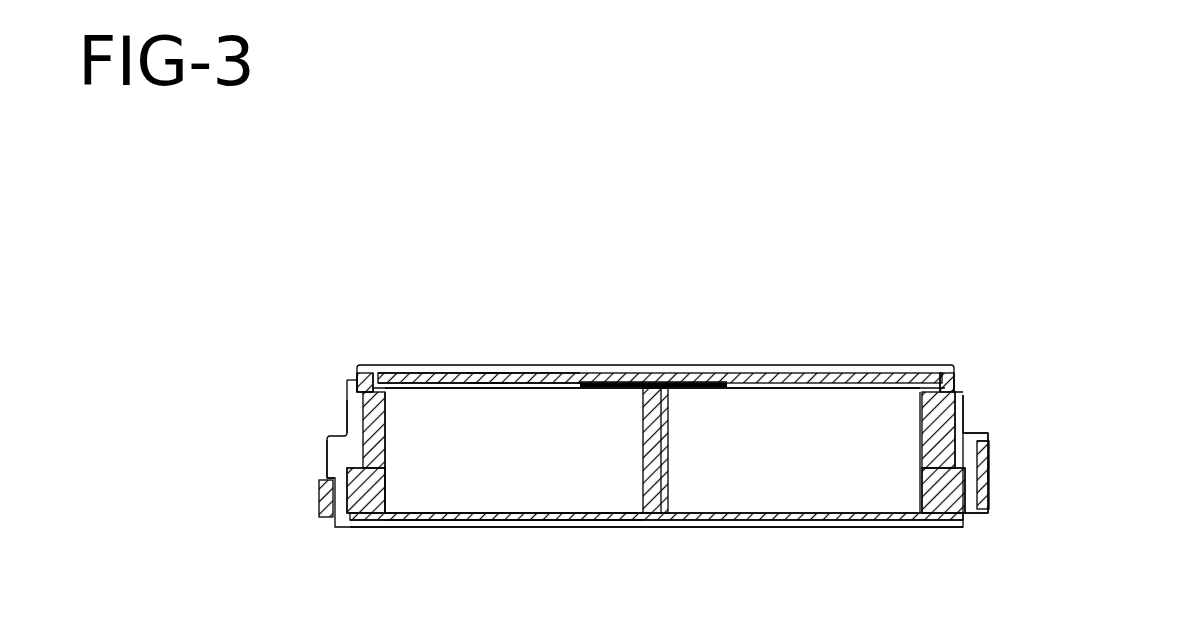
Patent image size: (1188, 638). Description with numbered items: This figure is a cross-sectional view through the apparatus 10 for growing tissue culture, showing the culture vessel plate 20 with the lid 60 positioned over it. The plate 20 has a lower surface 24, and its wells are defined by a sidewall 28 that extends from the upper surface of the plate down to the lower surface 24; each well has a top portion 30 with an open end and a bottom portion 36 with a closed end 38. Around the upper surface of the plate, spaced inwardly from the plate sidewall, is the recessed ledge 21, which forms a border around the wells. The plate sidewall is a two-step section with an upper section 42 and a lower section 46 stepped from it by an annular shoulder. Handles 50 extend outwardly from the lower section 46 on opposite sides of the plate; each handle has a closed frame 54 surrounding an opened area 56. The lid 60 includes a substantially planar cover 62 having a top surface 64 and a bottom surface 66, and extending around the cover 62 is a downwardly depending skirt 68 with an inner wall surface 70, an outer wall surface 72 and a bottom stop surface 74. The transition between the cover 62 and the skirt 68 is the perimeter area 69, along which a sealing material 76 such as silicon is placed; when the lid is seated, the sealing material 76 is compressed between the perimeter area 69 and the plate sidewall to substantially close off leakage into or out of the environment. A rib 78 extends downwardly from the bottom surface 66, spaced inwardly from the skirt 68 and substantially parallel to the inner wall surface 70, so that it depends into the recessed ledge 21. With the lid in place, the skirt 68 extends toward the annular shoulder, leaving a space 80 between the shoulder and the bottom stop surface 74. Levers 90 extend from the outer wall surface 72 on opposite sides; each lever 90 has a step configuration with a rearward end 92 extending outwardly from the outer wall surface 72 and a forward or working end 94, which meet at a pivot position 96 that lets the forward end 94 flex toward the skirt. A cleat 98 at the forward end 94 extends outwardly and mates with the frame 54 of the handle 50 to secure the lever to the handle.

The apparatus 10 is at (1015, 138).
The culture vessel plate 20 is at (805, 537).
The recessed ledge 21 is at (937, 380).
The lower surface 24 is at (888, 521).
The sidewall 28 is at (607, 530).
The top portion 30 is at (903, 400).
The bottom portion 36 is at (460, 521).
The closed end 38 is at (538, 521).
The upper section 42 is at (963, 402).
The lower section 46 is at (980, 513).
The handle 50 is at (323, 497).
The closed frame 54 is at (988, 468).
The opened area 56 is at (343, 527).
The lid 60 is at (730, 355).
The planar cover 62 is at (792, 376).
The top surface 64 is at (530, 375).
The bottom surface 66 is at (508, 365).
The skirt 68 is at (350, 398).
The perimeter area 69 is at (955, 385).
The inner wall surface 70 is at (348, 425).
The outer wall surface 72 is at (617, 362).
The bottom stop surface 74 is at (700, 380).
The sealing material 76 is at (350, 381).
The rib 78 is at (373, 378).
The space 80 is at (326, 476).
The lever 90 is at (328, 462).
The rearward end 92 is at (975, 430).
The forward end 94 is at (987, 458).
The pivot position 96 is at (993, 437).
The cleat 98 is at (987, 508).